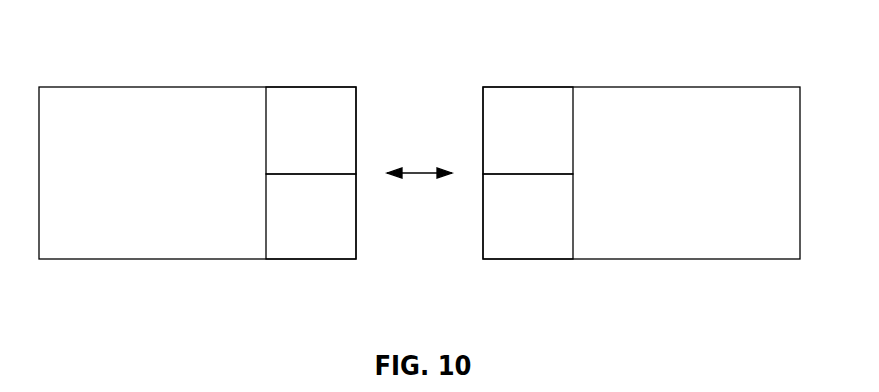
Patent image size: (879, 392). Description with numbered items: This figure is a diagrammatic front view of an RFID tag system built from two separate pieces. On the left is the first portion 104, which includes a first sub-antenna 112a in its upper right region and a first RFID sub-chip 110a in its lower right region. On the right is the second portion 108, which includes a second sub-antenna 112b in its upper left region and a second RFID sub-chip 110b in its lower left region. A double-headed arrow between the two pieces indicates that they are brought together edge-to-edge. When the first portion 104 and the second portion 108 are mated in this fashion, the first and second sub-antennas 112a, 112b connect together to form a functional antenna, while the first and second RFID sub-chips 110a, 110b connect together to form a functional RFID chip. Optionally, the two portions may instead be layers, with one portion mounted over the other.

The first portion 104 is at (130, 86).
The second portion 108 is at (693, 86).
The first sub-antenna 112a is at (314, 110).
The first RFID sub-chip 110a is at (314, 239).
The second sub-antenna 112b is at (528, 110).
The second RFID sub-chip 110b is at (529, 239).